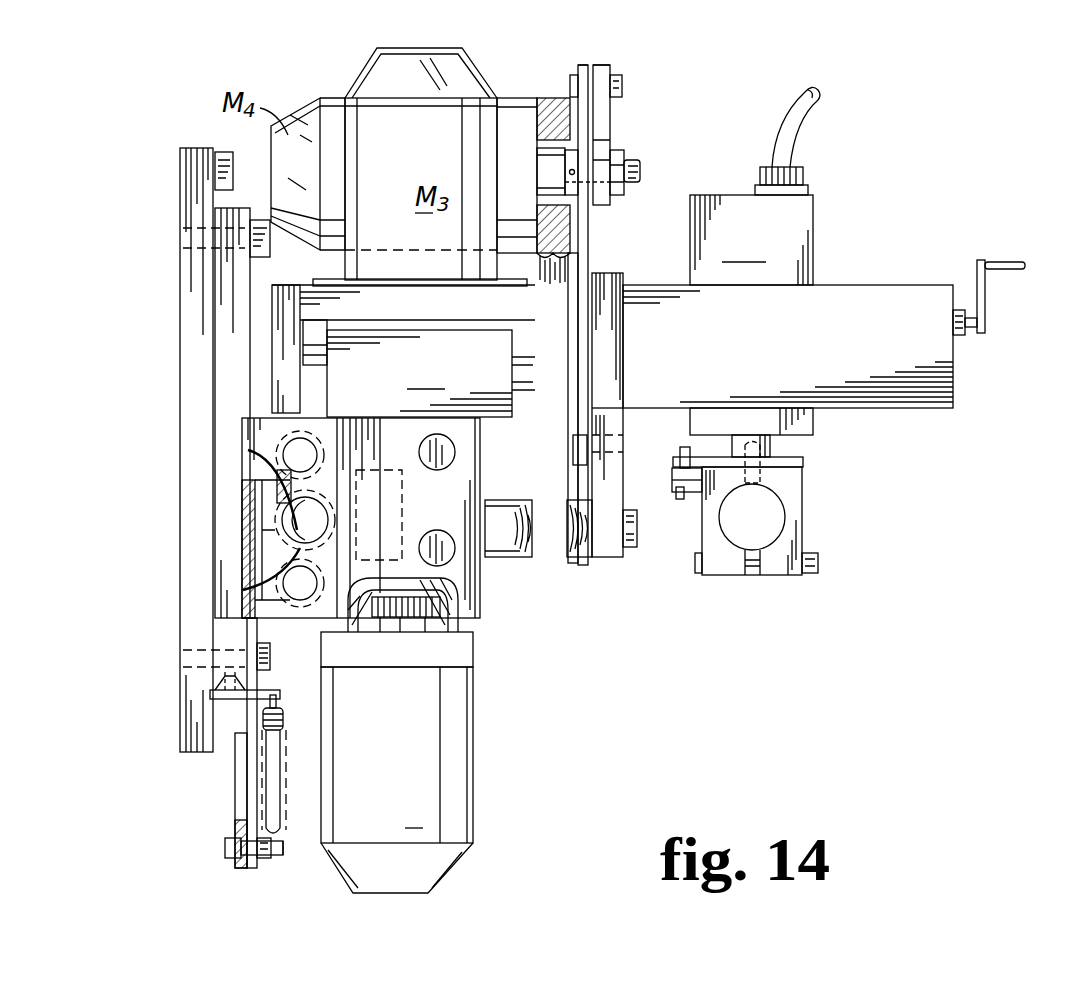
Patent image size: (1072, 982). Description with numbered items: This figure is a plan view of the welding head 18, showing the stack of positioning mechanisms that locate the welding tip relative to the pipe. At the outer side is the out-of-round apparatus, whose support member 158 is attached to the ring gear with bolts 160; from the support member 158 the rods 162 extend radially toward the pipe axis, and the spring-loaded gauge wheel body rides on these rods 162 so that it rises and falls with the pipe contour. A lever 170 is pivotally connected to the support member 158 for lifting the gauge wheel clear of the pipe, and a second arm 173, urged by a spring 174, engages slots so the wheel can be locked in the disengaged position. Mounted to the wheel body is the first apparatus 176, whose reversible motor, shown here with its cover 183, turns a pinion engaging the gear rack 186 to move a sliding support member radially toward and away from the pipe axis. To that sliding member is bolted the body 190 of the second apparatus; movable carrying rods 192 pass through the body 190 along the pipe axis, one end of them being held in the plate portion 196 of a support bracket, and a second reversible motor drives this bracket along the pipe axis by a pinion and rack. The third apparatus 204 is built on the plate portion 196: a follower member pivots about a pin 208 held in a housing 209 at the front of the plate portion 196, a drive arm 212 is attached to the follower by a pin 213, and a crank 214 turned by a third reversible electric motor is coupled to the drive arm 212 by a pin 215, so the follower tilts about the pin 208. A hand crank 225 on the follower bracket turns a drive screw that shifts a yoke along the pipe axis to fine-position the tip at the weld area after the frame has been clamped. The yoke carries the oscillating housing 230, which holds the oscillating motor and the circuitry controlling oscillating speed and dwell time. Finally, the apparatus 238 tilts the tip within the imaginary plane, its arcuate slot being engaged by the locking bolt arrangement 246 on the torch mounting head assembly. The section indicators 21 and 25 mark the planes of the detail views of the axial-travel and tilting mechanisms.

The support member 158 is at (284, 620).
The bolts 160 is at (183, 240).
The rods 162 is at (292, 452).
The lever 170 is at (258, 862).
The second arm 173 is at (236, 760).
The spring 174 is at (282, 750).
The first apparatus 176 is at (478, 753).
The motor cover 183 is at (483, 76).
The gear rack 186 is at (452, 612).
The body 190 is at (612, 351).
The movable carrying rods 192 is at (315, 350).
The plate portion 196 is at (553, 100).
The third apparatus 204 is at (612, 66).
The pin 208 is at (634, 545).
The housing 209 is at (508, 560).
The drive arm 212 is at (592, 220).
The pin 213 is at (618, 443).
The crank 214 is at (612, 118).
The pin 215 is at (622, 87).
The hand crank 225 is at (987, 292).
The housing 230 is at (814, 225).
The apparatus 238 is at (806, 462).
The locking bolt arrangement 246 is at (698, 500).
The head 18 is at (530, 904).
The section line 21 is at (600, 632).
The section line 25 is at (1007, 699).